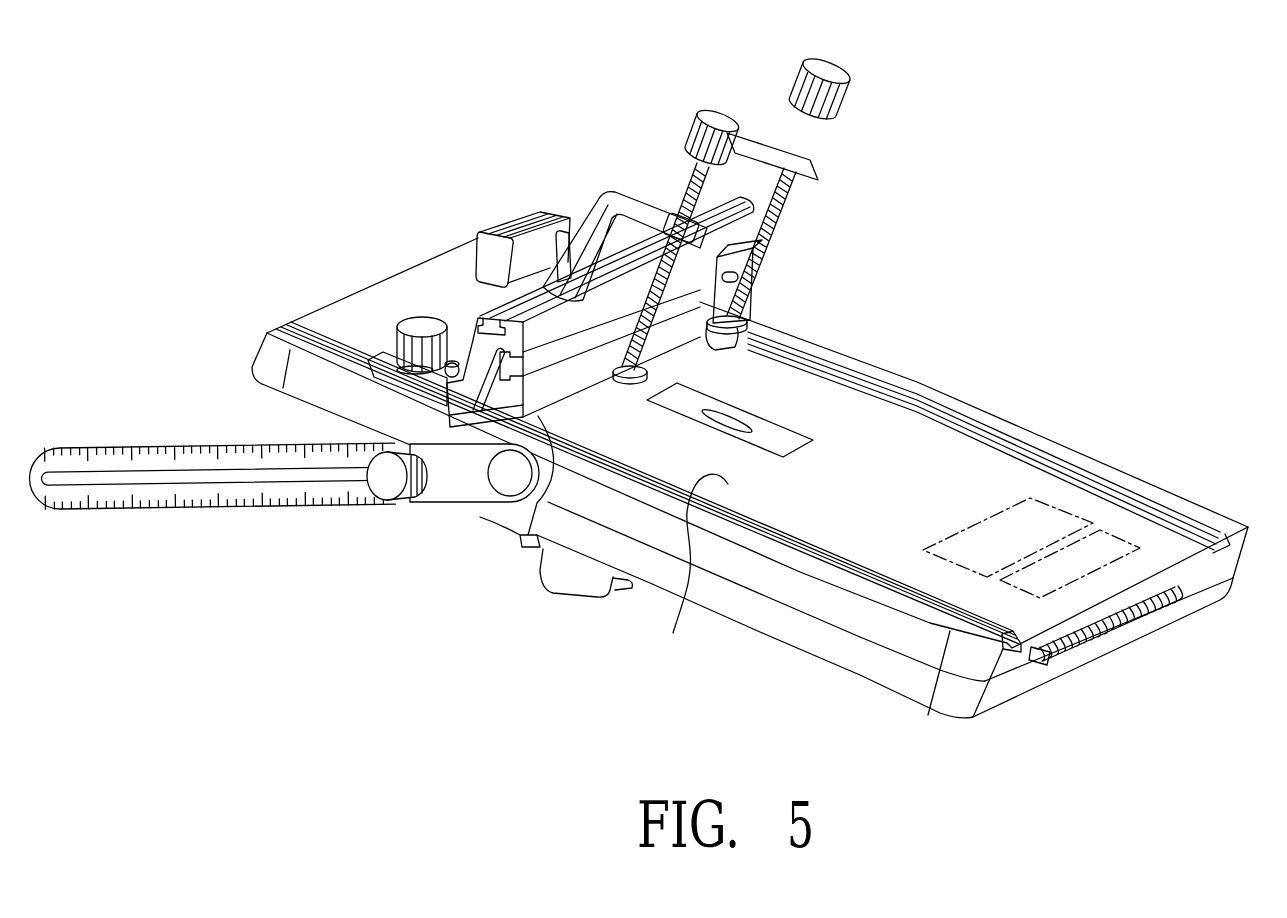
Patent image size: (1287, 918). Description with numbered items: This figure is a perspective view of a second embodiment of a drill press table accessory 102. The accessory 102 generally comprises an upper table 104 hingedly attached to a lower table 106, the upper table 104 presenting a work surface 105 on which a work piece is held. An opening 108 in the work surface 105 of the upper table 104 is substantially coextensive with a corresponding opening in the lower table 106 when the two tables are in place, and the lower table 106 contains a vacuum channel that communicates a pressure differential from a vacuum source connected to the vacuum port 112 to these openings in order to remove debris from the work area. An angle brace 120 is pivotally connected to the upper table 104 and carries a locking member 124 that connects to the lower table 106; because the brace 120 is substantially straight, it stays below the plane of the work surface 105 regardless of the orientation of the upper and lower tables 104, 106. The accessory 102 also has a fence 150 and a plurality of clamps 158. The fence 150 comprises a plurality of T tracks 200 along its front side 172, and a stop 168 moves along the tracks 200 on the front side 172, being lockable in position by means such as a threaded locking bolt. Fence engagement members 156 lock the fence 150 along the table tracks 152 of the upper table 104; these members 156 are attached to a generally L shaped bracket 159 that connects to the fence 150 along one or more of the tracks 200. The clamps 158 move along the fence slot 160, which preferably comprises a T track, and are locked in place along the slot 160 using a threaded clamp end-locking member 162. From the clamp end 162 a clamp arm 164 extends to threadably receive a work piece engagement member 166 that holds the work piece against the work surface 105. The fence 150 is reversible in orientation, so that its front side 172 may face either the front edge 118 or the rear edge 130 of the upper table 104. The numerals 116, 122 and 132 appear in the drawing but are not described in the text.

The drill press table accessory 102 is at (963, 356).
The upper table 104 is at (1207, 497).
The work surface 105 is at (687, 571).
The lower table 106 is at (837, 677).
The opening 108 is at (773, 438).
The vacuum port 112 is at (563, 597).
The rack gear 116 is at (1080, 647).
The front edge 118 is at (1195, 567).
The angle brace 120 is at (211, 474).
The scale markings 122 is at (103, 447).
The locking member 124 is at (385, 483).
The rear edge 130 is at (320, 311).
The guide rail 132 is at (482, 288).
The fence 150 is at (452, 360).
The table tracks 152 is at (1141, 500).
The fence engagement members 156 is at (397, 330).
The clamps 158 is at (637, 174).
The L shaped bracket 159 is at (387, 377).
The fence slot 160 is at (503, 222).
The threaded clamp end-locking member 162 is at (560, 231).
The clamp arm 164 is at (613, 177).
The work piece engagement member 166 is at (717, 107).
The stop 168 is at (714, 349).
The front side 172 is at (550, 363).
The T tracks 200 is at (475, 335).